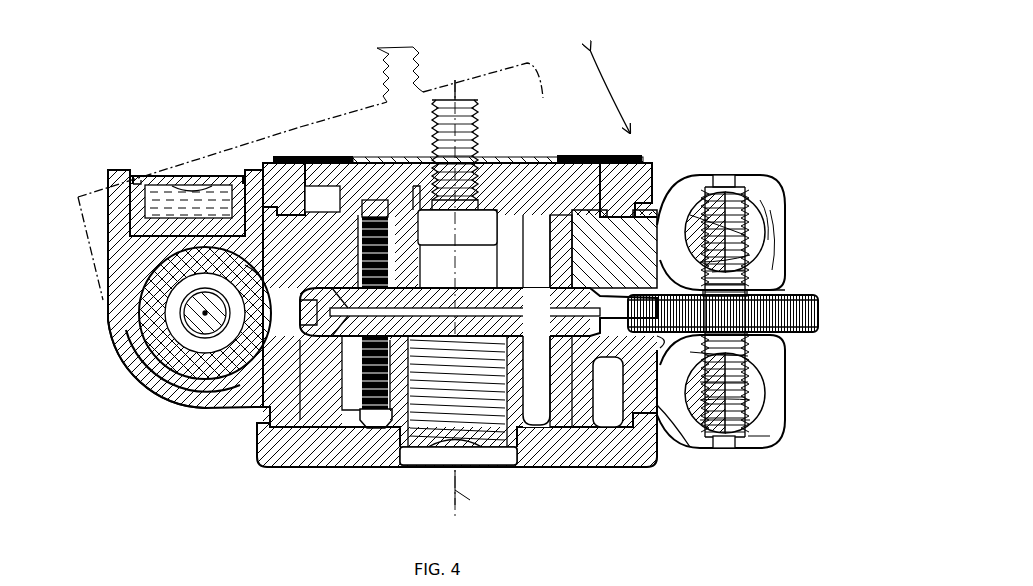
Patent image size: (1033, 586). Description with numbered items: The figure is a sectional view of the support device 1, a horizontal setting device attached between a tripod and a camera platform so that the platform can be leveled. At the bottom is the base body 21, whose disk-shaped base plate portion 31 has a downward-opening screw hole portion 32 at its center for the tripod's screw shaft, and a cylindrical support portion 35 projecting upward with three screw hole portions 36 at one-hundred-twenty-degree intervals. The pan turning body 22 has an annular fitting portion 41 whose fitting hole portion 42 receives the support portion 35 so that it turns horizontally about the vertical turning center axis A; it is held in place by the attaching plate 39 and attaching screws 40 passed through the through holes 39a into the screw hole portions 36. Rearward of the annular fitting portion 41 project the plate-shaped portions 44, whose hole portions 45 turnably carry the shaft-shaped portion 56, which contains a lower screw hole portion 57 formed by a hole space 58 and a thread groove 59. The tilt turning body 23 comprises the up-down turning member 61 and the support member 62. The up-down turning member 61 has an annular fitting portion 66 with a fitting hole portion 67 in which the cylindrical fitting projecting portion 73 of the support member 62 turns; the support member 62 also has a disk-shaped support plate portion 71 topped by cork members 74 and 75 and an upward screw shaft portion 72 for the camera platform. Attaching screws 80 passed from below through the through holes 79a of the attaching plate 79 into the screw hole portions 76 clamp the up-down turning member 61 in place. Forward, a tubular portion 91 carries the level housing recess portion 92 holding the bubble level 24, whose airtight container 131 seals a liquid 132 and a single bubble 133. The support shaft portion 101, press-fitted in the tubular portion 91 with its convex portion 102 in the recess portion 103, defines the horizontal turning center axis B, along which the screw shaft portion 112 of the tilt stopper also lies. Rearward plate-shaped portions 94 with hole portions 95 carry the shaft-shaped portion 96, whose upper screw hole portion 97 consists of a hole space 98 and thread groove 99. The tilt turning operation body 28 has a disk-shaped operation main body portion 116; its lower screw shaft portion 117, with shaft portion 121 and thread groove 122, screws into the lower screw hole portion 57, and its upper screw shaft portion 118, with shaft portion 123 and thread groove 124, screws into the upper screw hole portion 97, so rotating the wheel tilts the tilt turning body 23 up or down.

The support device 1 is at (673, 122).
The base body 21 is at (343, 476).
The pan turning body 22 is at (788, 398).
The tilt turning body 23 is at (118, 365).
The bubble level 24 is at (196, 180).
The tilt turning operation body 28 is at (822, 309).
The base plate portion 31 is at (272, 460).
The screw hole portion 32 is at (447, 458).
The support portion 35 is at (338, 400).
The screw hole portions 36 is at (367, 428).
The attaching plate 39 is at (532, 420).
The through holes 39a is at (320, 400).
The attaching screws 40 is at (390, 426).
The annular fitting portion 41 is at (635, 408).
The fitting hole portion 42 is at (575, 400).
The plate-shaped portions 44 is at (756, 450).
The hole portion 45 is at (698, 420).
The shaft-shaped portion 56 is at (750, 382).
The lower screw hole portion 57 is at (750, 420).
The hole space 58 is at (758, 436).
The thread groove 59 is at (750, 400).
The up-down turning member 61 is at (112, 335).
The support member 62 is at (650, 168).
The annular fitting portion 66 is at (592, 245).
The fitting hole portion 67 is at (560, 250).
The support plate portion 71 is at (632, 160).
The screw shaft portion 72 is at (468, 112).
The fitting projecting portion 73 is at (536, 250).
The cork member 74 is at (346, 180).
The cork member 75 is at (397, 160).
The screw hole portions 76 is at (378, 200).
The attaching plate 79 is at (295, 245).
The through holes 79a is at (323, 190).
The attaching screws 80 is at (420, 196).
The tubular portion 91 is at (133, 378).
The level housing recess portion 92 is at (148, 186).
The plate-shaped portions 94 is at (768, 200).
The hole portion 95 is at (748, 222).
The shaft-shaped portion 96 is at (750, 236).
The upper screw hole portion 97 is at (752, 256).
The hole space 98 is at (748, 190).
The thread groove 99 is at (760, 205).
The support shaft portion 101 is at (175, 352).
The convex portion 102 is at (250, 268).
The recess portion 103 is at (262, 212).
The screw shaft portion 112 is at (212, 330).
The operation main body portion 116 is at (805, 292).
The lower screw shaft portion 117 is at (724, 430).
The upper screw shaft portion 118 is at (724, 215).
The shaft portion 121 is at (748, 336).
The thread groove 122 is at (748, 356).
The shaft portion 123 is at (746, 270).
The thread groove 124 is at (752, 286).
The airtight container 131 is at (172, 178).
The liquid 132 is at (160, 196).
The bubble 133 is at (215, 186).
The turning center axis A is at (469, 488).
The turning center axis B is at (205, 313).